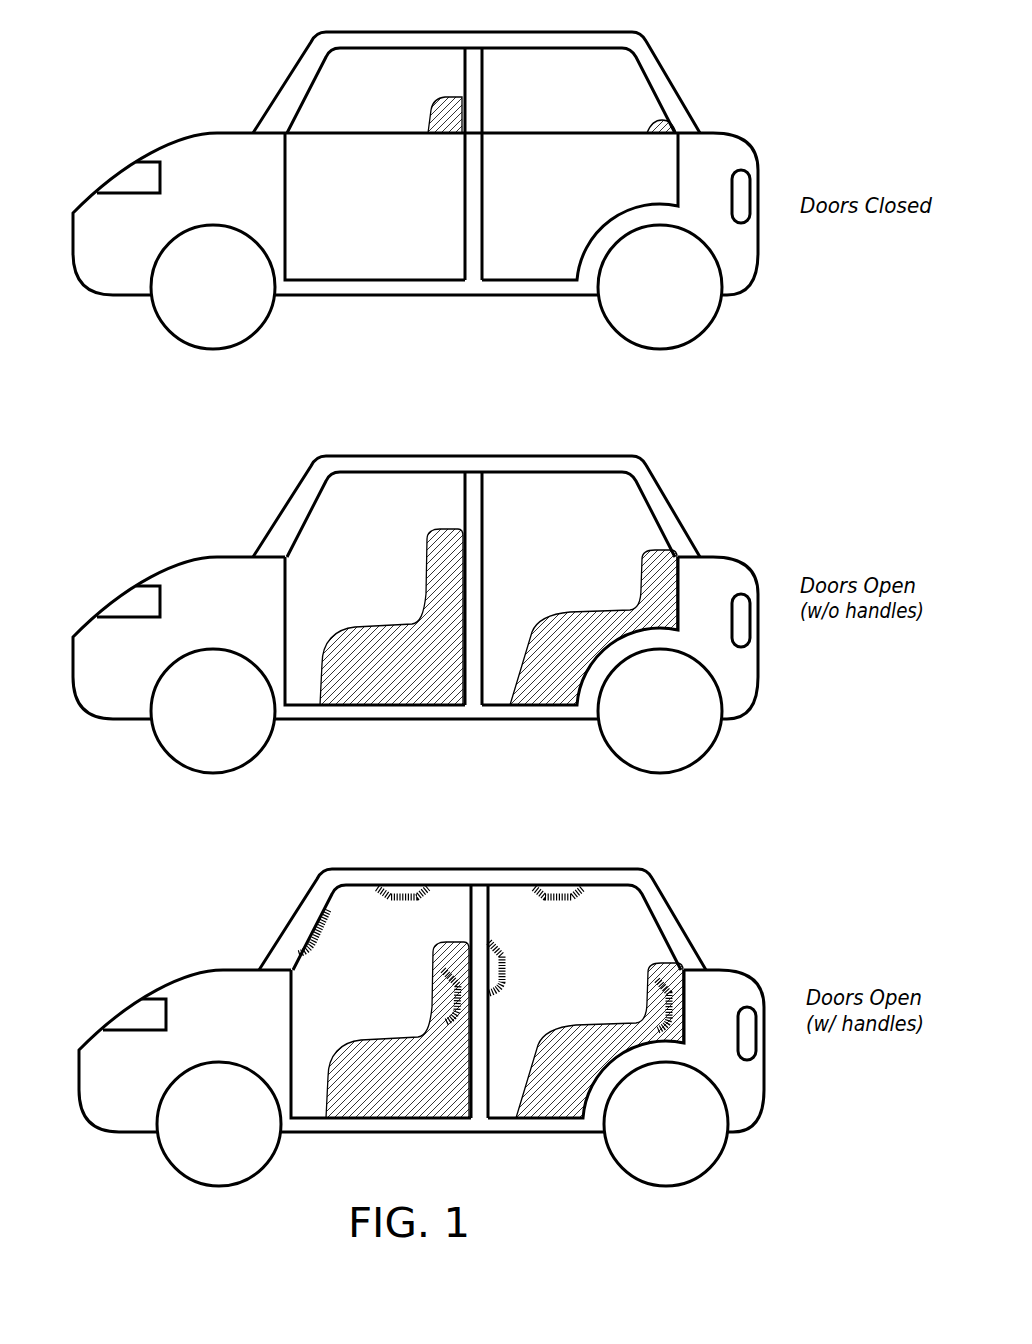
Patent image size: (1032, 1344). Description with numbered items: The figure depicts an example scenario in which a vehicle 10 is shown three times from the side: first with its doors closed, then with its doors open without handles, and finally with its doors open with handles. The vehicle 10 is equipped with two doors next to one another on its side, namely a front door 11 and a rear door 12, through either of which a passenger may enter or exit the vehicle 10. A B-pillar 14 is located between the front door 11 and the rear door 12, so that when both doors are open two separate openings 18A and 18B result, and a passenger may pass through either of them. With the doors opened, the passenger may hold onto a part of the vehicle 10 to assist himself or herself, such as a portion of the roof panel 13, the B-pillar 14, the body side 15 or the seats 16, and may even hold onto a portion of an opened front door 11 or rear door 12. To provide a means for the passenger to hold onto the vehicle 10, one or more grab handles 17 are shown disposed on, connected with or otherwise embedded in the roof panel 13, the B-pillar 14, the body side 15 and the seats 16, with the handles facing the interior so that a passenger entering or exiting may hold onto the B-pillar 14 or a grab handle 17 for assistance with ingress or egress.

The vehicle 10 is at (88, 149).
The front door 11 is at (362, 199).
The rear door 12 is at (554, 199).
The roof panel 13 is at (588, 467).
The B-pillar 14 is at (473, 505).
The body side 15 is at (695, 612).
The seats 16 is at (407, 676).
The grab handles 17 is at (388, 902).
The opening 18A is at (373, 553).
The opening 18B is at (593, 547).